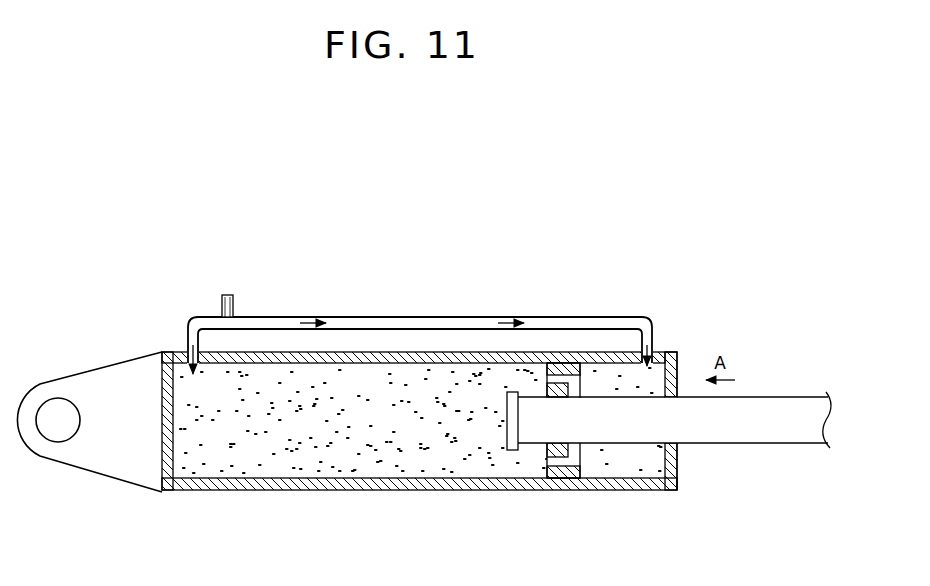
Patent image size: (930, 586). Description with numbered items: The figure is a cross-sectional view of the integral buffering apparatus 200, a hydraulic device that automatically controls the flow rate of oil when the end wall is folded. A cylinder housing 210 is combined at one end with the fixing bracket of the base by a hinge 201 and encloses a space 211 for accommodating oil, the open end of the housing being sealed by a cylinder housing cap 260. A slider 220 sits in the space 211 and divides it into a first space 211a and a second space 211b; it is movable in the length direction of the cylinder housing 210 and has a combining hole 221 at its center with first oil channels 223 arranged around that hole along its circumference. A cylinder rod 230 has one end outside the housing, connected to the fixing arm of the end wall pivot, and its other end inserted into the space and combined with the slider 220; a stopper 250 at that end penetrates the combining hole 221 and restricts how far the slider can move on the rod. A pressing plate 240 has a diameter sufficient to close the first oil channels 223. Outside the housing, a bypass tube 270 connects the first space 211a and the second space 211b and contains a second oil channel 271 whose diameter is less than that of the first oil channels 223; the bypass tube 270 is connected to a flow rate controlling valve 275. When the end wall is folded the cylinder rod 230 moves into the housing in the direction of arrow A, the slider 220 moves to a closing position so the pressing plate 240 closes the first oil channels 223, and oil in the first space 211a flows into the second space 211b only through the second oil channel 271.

The integral buffering apparatus 200 is at (300, 212).
The hinge 201 is at (58, 405).
The cylinder housing 210 is at (356, 360).
The space 211 is at (533, 265).
The first space 211a is at (507, 372).
The second space 211b is at (613, 370).
The slider 220 is at (585, 458).
The combining hole 221 is at (590, 452).
The first oil channels 223 is at (543, 467).
The cylinder rod 230 is at (775, 398).
The pressing plate 240 is at (560, 442).
The stopper 250 is at (512, 449).
The cylinder housing cap 260 is at (676, 464).
The bypass tube 270 is at (420, 303).
The second oil channel 271 is at (474, 316).
The flow rate controlling valve 275 is at (228, 293).